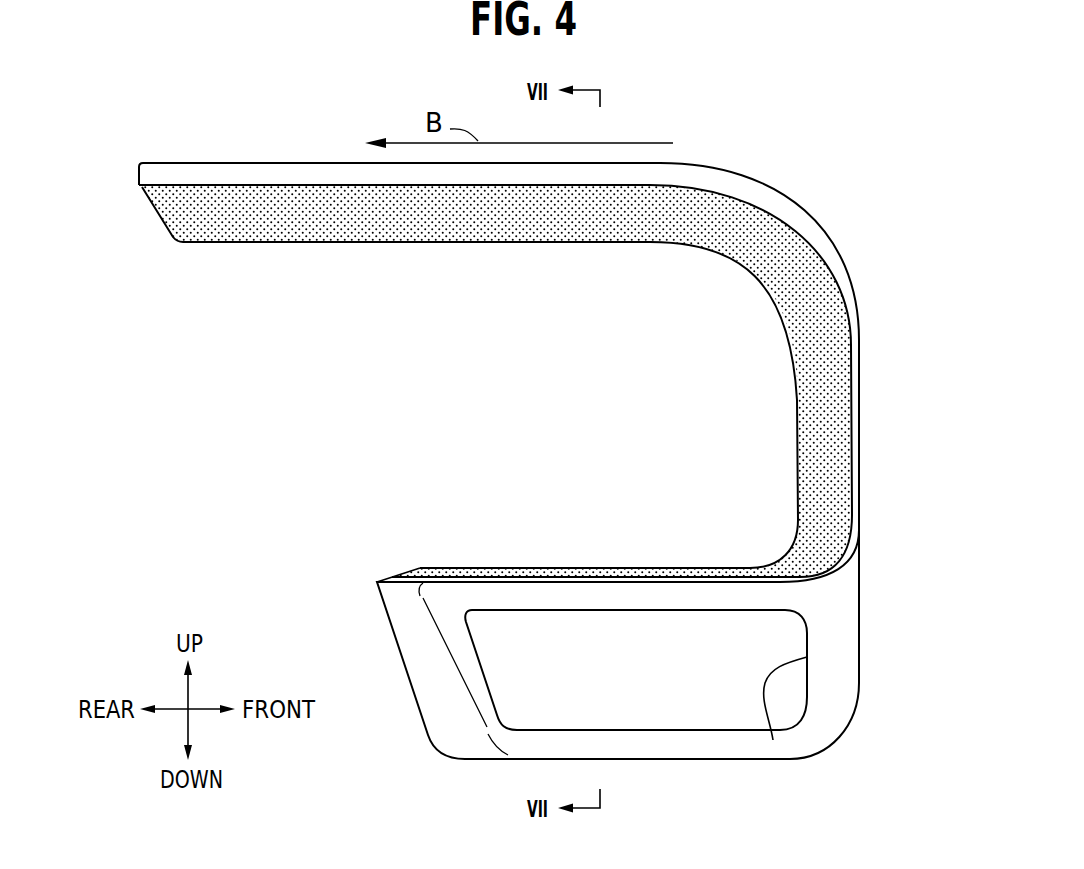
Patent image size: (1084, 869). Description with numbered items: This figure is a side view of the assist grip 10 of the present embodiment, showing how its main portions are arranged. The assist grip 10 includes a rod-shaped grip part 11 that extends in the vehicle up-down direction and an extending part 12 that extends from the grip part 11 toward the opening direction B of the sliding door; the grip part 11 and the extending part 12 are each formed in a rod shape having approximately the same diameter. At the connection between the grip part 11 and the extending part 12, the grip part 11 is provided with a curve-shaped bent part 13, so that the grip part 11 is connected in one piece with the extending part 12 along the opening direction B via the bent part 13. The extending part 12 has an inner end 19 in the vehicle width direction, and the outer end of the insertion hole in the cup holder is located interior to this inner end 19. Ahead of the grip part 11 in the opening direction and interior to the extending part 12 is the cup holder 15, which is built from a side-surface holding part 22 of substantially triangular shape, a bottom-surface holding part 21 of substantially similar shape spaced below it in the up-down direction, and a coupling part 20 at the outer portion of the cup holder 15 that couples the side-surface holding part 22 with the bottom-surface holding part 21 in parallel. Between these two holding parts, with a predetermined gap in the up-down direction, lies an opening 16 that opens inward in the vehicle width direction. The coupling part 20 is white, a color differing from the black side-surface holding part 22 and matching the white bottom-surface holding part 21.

The assist grip 10 is at (790, 178).
The grip part 11 is at (851, 407).
The extending part 12 is at (313, 173).
The bent part 13 is at (792, 223).
The cup holder 15 is at (636, 548).
The opening 16 is at (775, 622).
The inner end 19 is at (430, 220).
The coupling part 20 is at (773, 740).
The bottom-surface holding part 21 is at (663, 740).
The side-surface holding part 22 is at (557, 567).